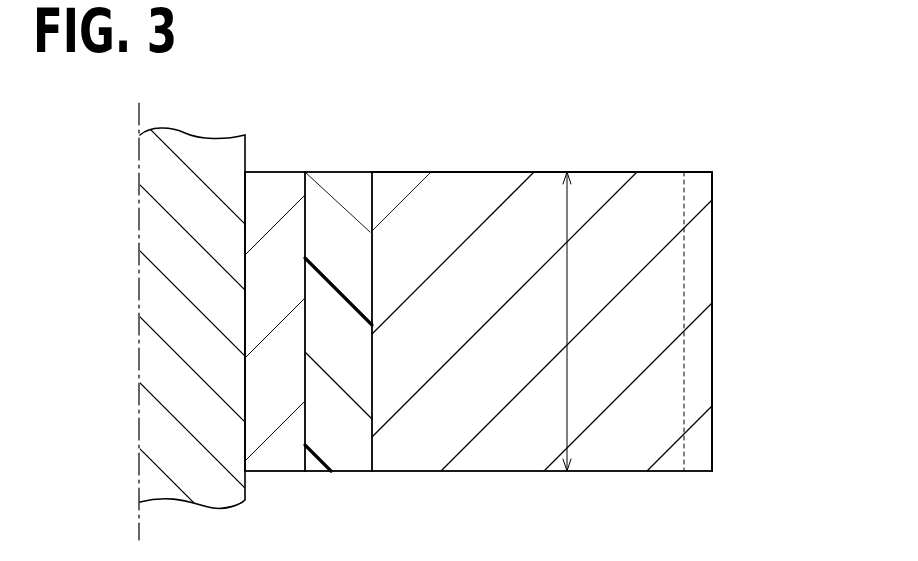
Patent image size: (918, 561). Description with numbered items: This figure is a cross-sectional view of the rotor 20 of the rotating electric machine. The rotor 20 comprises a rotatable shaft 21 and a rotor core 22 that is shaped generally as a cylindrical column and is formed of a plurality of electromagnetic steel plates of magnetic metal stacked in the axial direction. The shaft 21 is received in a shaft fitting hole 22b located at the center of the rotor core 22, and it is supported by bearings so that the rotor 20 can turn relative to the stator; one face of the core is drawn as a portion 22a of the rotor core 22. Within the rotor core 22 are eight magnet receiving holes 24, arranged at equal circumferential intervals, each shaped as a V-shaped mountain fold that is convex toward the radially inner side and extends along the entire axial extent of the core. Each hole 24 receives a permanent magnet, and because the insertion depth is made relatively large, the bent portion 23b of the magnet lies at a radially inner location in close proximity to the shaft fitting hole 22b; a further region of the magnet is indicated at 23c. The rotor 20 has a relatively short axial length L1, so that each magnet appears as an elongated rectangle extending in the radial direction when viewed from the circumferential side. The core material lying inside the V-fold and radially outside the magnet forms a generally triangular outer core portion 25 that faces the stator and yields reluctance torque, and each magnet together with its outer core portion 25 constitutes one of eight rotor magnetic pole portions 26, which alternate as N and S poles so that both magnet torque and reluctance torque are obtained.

The rotor 20 is at (516, 152).
The rotatable shaft 21 is at (183, 134).
The rotor core 22 is at (714, 172).
The end face of coating layer 22a is at (714, 283).
The shaft fitting hole 22b is at (247, 168).
The bent portion 23b is at (348, 172).
The outer boundary region 23c is at (684, 374).
The magnet receiving hole 24 is at (369, 362).
The outer core portion 25 is at (600, 172).
The rotor magnetic pole portion 26 is at (666, 171).
The axial length L1 is at (570, 274).